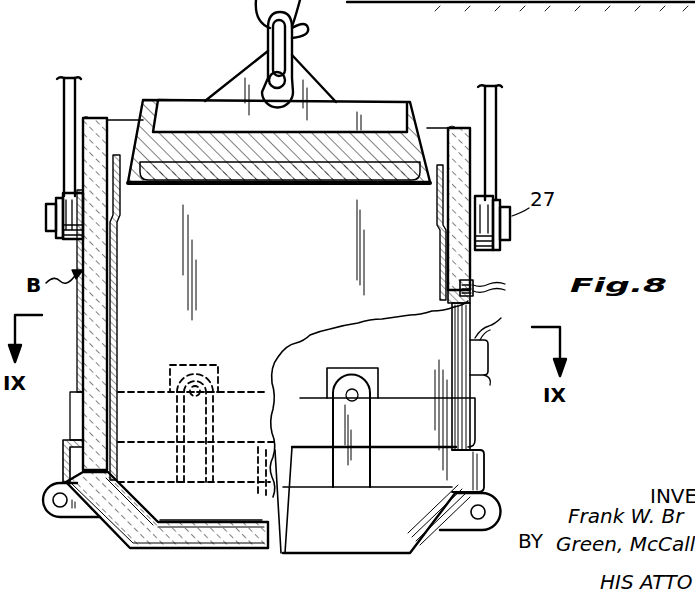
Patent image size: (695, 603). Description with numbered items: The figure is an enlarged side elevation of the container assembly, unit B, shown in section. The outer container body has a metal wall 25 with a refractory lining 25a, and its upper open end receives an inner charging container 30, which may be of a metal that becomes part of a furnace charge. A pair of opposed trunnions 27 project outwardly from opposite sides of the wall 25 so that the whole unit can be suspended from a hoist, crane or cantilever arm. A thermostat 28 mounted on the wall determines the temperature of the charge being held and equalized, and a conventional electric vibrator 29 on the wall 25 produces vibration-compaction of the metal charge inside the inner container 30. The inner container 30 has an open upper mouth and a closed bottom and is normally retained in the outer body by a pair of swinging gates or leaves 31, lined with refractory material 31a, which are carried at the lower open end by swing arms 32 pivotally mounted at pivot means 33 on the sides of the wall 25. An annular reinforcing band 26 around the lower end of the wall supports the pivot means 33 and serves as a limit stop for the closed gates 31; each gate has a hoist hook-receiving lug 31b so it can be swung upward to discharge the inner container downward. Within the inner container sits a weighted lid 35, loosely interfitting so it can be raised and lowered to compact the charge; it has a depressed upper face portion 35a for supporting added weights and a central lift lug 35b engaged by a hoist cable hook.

The metal wall 25 is at (83, 332).
The refractory lining 25a is at (82, 361).
The annular reinforcing band 26 is at (478, 423).
The trunnions 27 is at (45, 210).
The thermostat 28 is at (474, 290).
The electric vibrator 29 is at (490, 378).
The inner charging container 30 is at (121, 270).
The swinging gates or leaves 31 is at (114, 547).
The refractory material 31a is at (222, 549).
The hoist hook-receiving lug 31b is at (60, 520).
The swing arms 32 is at (362, 418).
The pivot means 33 is at (363, 368).
The weighted lid 35 is at (173, 100).
The depressed upper face portion 35a is at (377, 142).
The lift lug 35b is at (312, 85).